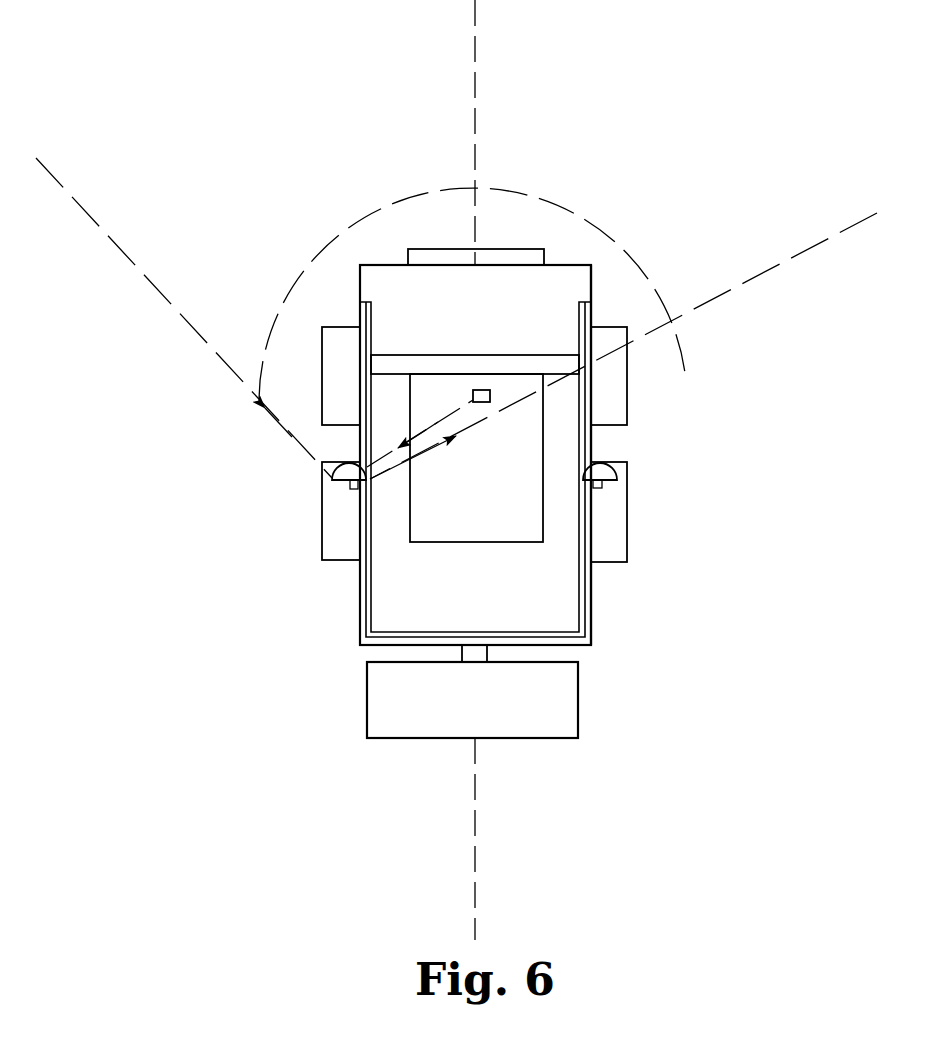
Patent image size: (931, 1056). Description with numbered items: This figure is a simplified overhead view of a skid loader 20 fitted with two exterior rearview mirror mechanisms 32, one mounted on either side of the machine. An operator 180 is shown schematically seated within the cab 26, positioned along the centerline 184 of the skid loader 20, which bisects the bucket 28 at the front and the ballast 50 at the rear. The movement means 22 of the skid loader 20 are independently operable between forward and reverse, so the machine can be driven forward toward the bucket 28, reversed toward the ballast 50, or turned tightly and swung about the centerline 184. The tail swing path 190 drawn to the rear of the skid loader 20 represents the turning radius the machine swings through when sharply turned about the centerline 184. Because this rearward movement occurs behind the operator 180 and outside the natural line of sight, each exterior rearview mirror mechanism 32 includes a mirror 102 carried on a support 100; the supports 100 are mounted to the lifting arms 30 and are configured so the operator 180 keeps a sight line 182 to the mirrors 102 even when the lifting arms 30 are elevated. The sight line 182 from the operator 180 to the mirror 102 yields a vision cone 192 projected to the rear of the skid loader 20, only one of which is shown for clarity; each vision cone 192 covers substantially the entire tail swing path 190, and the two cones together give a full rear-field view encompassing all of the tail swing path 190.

The skid loader 20 is at (755, 455).
The movement means 22 is at (620, 441).
The cab 26 is at (438, 542).
The bucket 28 is at (578, 706).
The lifting arms 30 is at (363, 548).
The exterior rearview mirror mechanism 32 is at (322, 484).
The ballast 50 is at (545, 258).
The support 100 is at (355, 489).
The mirror 102 is at (343, 470).
The operator 180 is at (481, 390).
The sight line 182 is at (426, 430).
The centerline 184 is at (478, 27).
The tail swing path 190 is at (633, 258).
The vision cone 192 is at (124, 258).